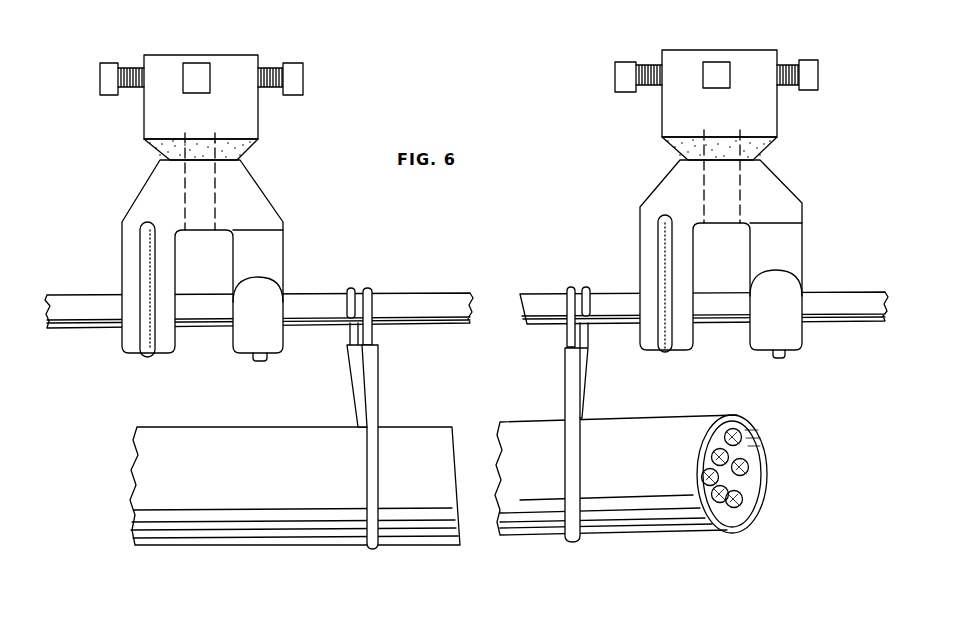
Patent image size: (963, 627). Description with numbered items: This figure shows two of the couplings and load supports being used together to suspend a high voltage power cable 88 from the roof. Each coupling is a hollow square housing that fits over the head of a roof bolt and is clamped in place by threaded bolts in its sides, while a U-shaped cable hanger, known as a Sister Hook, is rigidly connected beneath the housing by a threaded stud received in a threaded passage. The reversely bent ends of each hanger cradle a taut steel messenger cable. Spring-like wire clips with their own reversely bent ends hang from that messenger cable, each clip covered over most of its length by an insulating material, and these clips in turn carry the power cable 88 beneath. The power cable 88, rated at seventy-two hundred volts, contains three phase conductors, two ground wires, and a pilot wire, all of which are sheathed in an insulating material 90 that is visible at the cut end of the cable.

The power cable 88 is at (278, 475).
The insulating material 90 is at (763, 457).